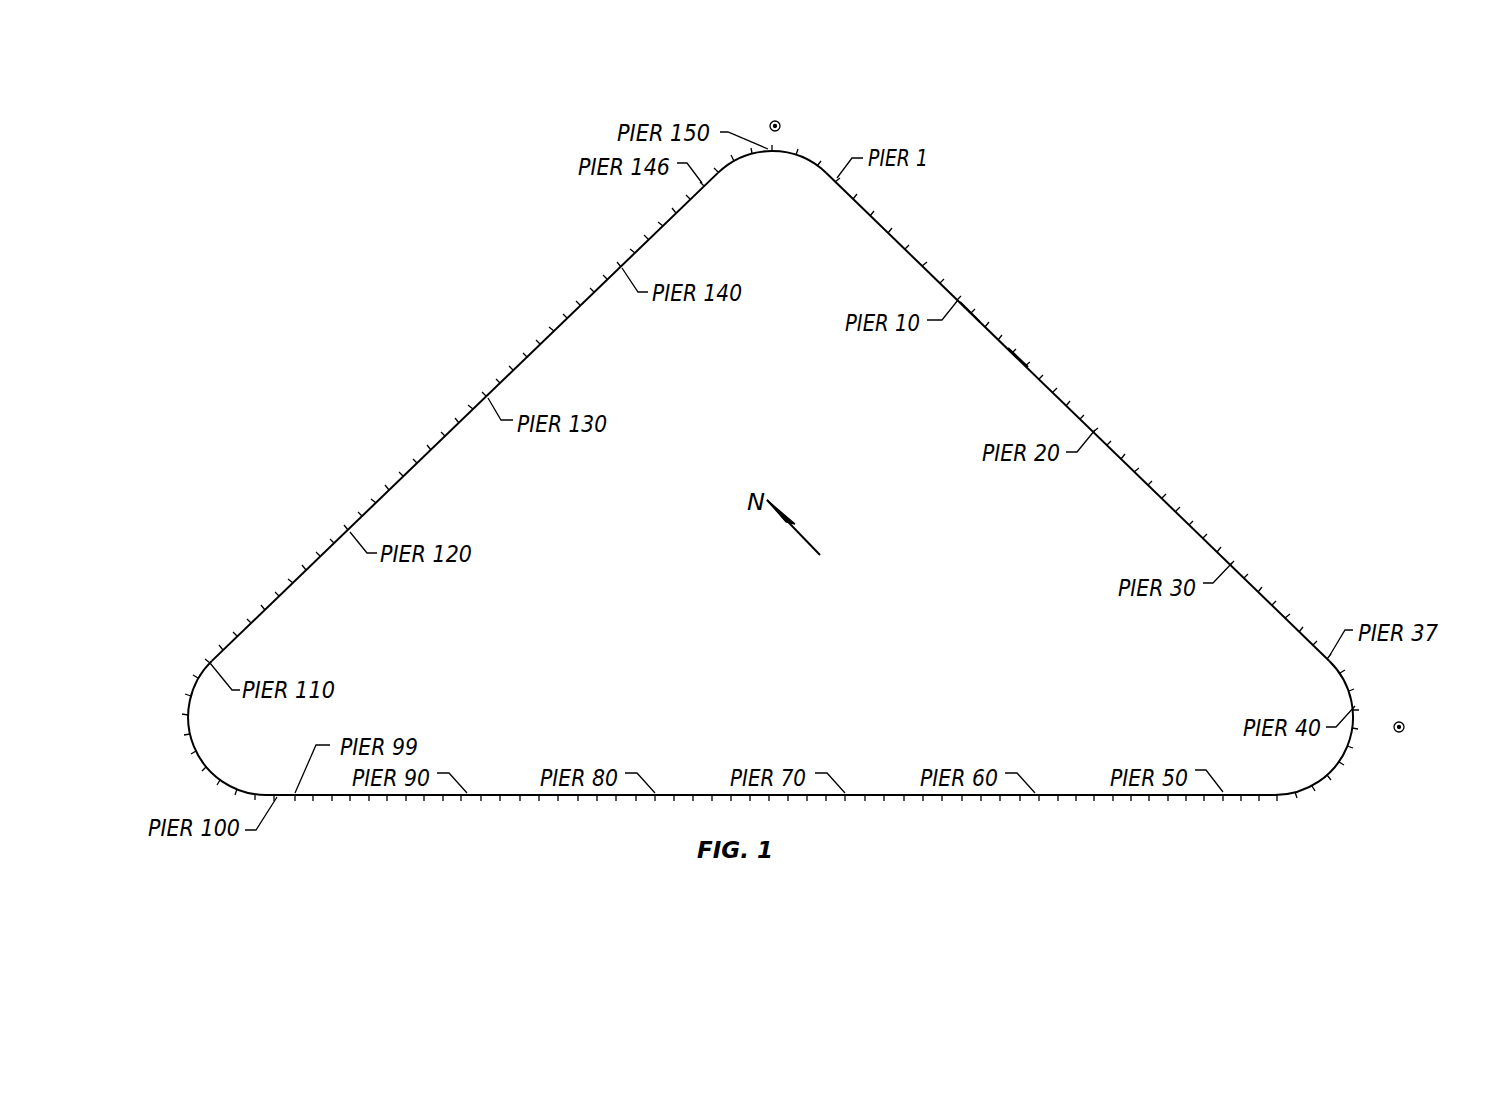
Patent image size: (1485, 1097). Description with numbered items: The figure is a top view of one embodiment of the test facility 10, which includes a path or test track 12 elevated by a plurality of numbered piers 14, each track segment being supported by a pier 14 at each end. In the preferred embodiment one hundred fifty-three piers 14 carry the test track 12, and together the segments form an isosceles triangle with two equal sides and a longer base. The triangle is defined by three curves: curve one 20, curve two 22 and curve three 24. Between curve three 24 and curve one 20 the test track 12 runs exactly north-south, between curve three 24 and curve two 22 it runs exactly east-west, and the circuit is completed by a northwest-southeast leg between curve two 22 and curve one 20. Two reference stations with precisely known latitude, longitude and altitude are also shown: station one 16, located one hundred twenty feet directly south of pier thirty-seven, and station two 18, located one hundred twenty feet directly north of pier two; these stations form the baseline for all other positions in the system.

The test facility 10 is at (776, 440).
The test track 12 is at (1018, 357).
The piers 14 is at (970, 313).
The station one 16 is at (1403, 724).
The station two 18 is at (777, 121).
The curve one 20 is at (1363, 742).
The curve two 22 is at (192, 762).
The curve three 24 is at (770, 148).